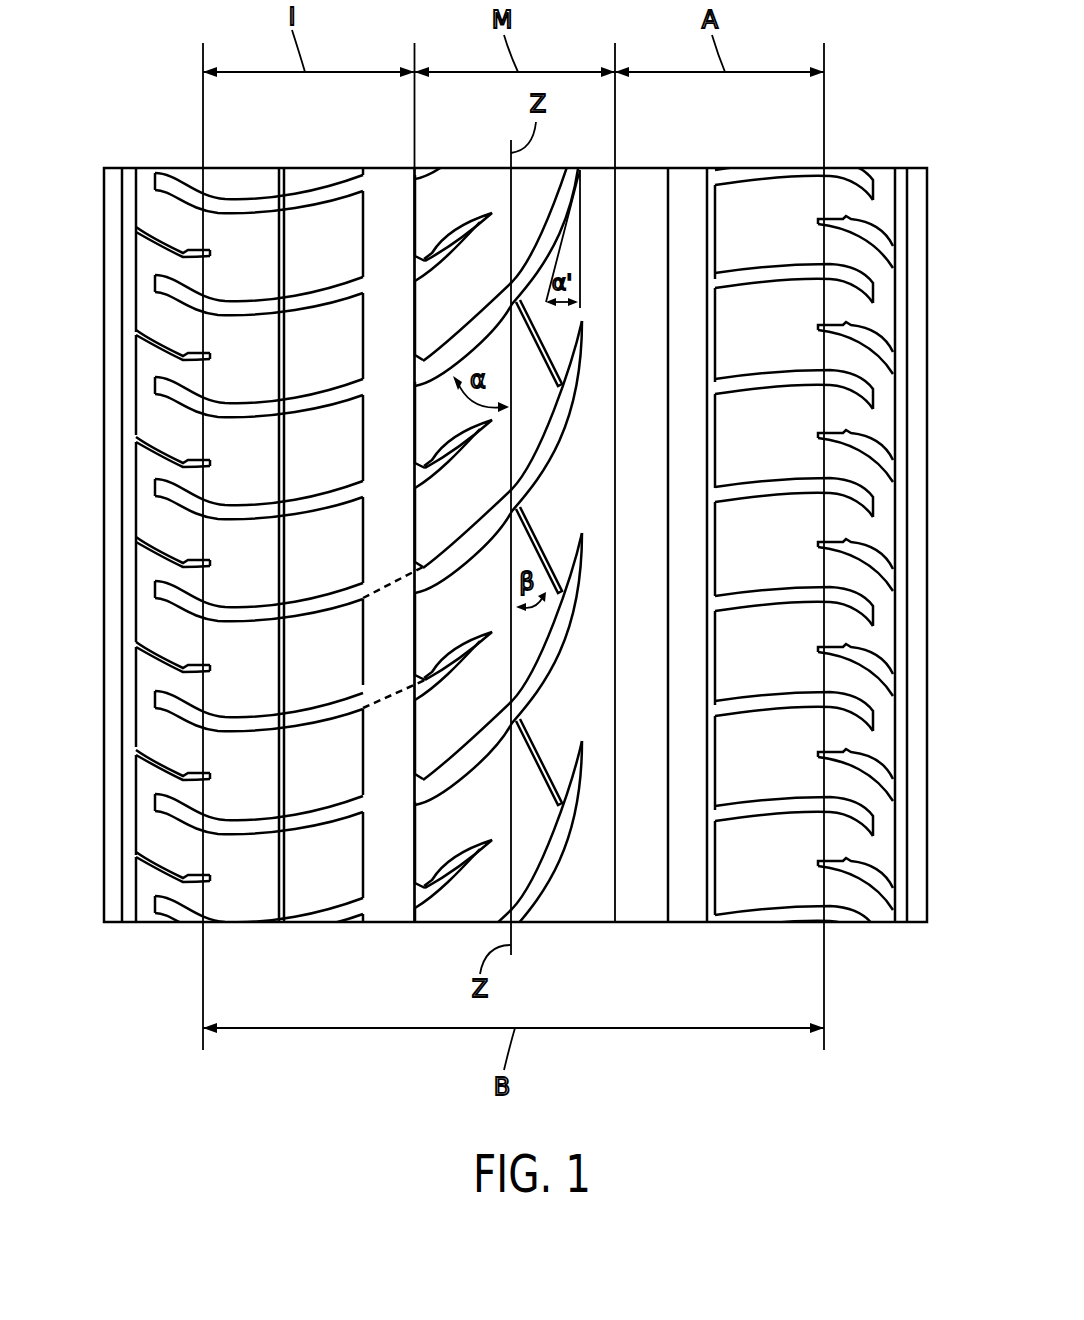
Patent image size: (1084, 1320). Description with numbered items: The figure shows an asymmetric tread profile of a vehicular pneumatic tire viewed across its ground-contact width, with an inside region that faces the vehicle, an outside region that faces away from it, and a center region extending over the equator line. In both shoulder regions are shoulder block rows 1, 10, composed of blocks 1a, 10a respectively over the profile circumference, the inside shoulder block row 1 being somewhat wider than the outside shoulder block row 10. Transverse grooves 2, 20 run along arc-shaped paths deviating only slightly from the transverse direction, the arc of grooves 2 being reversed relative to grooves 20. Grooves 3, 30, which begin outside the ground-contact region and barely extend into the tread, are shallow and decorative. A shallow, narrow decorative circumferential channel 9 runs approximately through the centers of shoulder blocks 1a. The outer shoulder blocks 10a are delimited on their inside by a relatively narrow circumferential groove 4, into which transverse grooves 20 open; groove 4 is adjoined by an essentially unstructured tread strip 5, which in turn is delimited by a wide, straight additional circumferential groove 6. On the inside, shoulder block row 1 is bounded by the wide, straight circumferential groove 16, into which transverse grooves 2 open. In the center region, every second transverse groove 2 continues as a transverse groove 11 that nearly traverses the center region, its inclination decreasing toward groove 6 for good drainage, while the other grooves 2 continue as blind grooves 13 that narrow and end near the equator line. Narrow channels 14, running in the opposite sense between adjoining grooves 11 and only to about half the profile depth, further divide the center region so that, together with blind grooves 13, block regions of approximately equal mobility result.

The inside shoulder block row 1 is at (252, 158).
The shoulder block 1a is at (315, 223).
The transverse groove 2 is at (327, 290).
The groove 3 is at (152, 240).
The circumferential groove 4 is at (713, 190).
The tread strip 5 is at (692, 190).
The circumferential groove 6 is at (647, 190).
The narrow circumferential groove 9 is at (280, 910).
The outside shoulder block row 10 is at (790, 935).
The shoulder block 10a is at (777, 773).
The transverse groove 11 is at (470, 757).
The blind groove 13 is at (463, 870).
The channel 14 is at (540, 753).
The circumferential groove 16 is at (383, 897).
The transverse groove 20 is at (798, 270).
The groove 30 is at (873, 233).